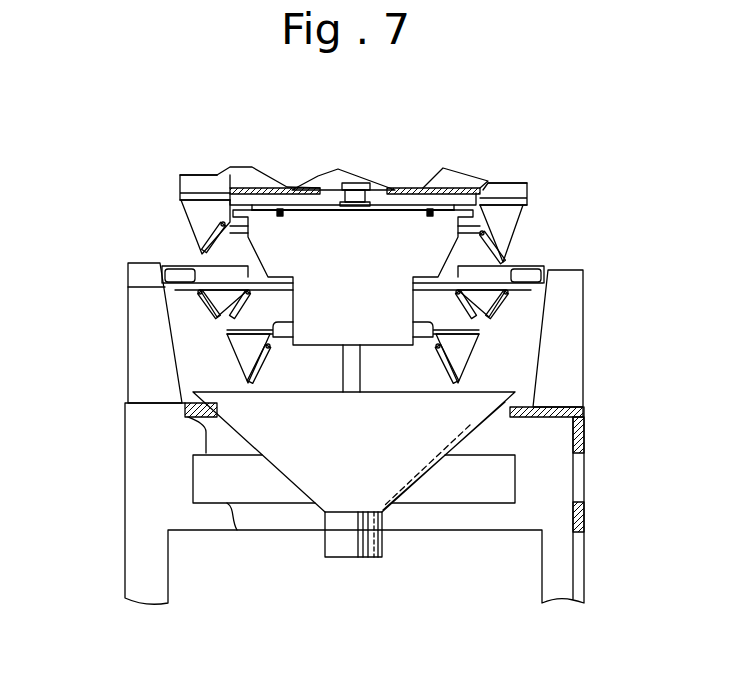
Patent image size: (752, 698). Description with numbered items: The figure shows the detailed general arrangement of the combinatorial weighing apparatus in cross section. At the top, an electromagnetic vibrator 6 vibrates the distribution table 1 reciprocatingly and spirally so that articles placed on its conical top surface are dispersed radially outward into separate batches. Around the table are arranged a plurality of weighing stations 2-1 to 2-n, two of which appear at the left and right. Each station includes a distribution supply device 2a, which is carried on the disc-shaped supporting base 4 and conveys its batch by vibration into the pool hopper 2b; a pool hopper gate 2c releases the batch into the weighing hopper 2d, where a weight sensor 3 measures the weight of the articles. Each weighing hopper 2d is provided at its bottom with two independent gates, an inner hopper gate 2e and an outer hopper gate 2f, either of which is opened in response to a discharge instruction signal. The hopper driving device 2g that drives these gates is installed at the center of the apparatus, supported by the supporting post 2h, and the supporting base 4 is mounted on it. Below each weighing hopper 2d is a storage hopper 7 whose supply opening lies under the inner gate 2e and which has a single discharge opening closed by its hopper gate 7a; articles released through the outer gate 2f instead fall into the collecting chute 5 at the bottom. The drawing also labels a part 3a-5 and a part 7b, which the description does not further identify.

The distribution table 1 is at (356, 168).
The weighing station 2-1 is at (217, 149).
The weighing station 2-n is at (526, 168).
The distribution supply device 2a is at (262, 178).
The pool hopper 2b is at (192, 208).
The pool hopper gate 2c is at (210, 235).
The weighing hopper 2d is at (213, 272).
The hopper gate 2e is at (230, 307).
The hopper gate 2f is at (205, 296).
The hopper driving device 2g is at (376, 232).
The supporting post 2h is at (360, 380).
The weight sensor 3 is at (142, 315).
The connecting member 3a-5 is at (455, 190).
The disc-shaped supporting base 4 is at (330, 178).
The collecting chute 5 is at (323, 487).
The electromagnetic vibrator 6 is at (373, 171).
The storage hopper 7 is at (233, 333).
The hopper gate 7a is at (258, 367).
The blade lever 7b is at (247, 353).